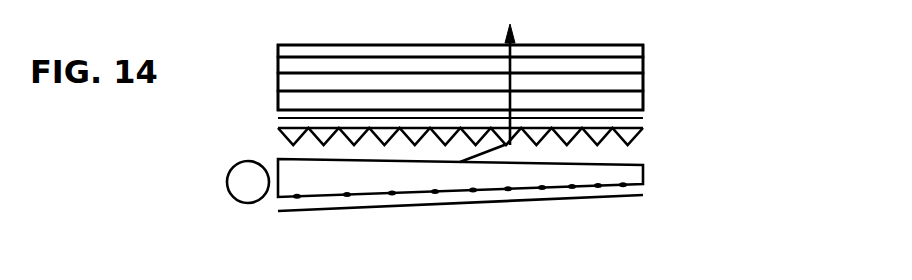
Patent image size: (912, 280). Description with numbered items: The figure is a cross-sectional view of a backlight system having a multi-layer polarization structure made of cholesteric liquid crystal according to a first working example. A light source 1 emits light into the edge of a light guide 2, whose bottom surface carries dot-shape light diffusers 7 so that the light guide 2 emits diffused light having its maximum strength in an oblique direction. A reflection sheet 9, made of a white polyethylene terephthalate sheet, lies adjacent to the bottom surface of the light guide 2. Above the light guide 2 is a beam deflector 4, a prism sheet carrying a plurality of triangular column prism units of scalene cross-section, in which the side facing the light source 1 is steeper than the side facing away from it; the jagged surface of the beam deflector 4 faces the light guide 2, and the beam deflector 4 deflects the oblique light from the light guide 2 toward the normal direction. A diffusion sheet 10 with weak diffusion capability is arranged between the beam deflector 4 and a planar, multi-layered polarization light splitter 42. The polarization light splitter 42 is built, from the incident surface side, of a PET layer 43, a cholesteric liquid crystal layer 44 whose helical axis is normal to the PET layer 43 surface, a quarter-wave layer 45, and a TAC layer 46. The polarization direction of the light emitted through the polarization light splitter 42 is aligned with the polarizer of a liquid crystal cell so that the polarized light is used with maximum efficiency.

The light source 1 is at (243, 187).
The light guide 2 is at (643, 173).
The beam deflector 4 is at (641, 140).
The dot-shape light diffusers 7 is at (350, 196).
The reflection sheet 9 is at (428, 203).
The diffusion sheet 10 is at (643, 125).
The polarization light splitter 42 is at (808, 28).
The PET layer 43 is at (643, 110).
The cholesteric liquid crystal layer 44 is at (643, 86).
The quarter-wave layer 45 is at (643, 68).
The TAC layer 46 is at (643, 53).